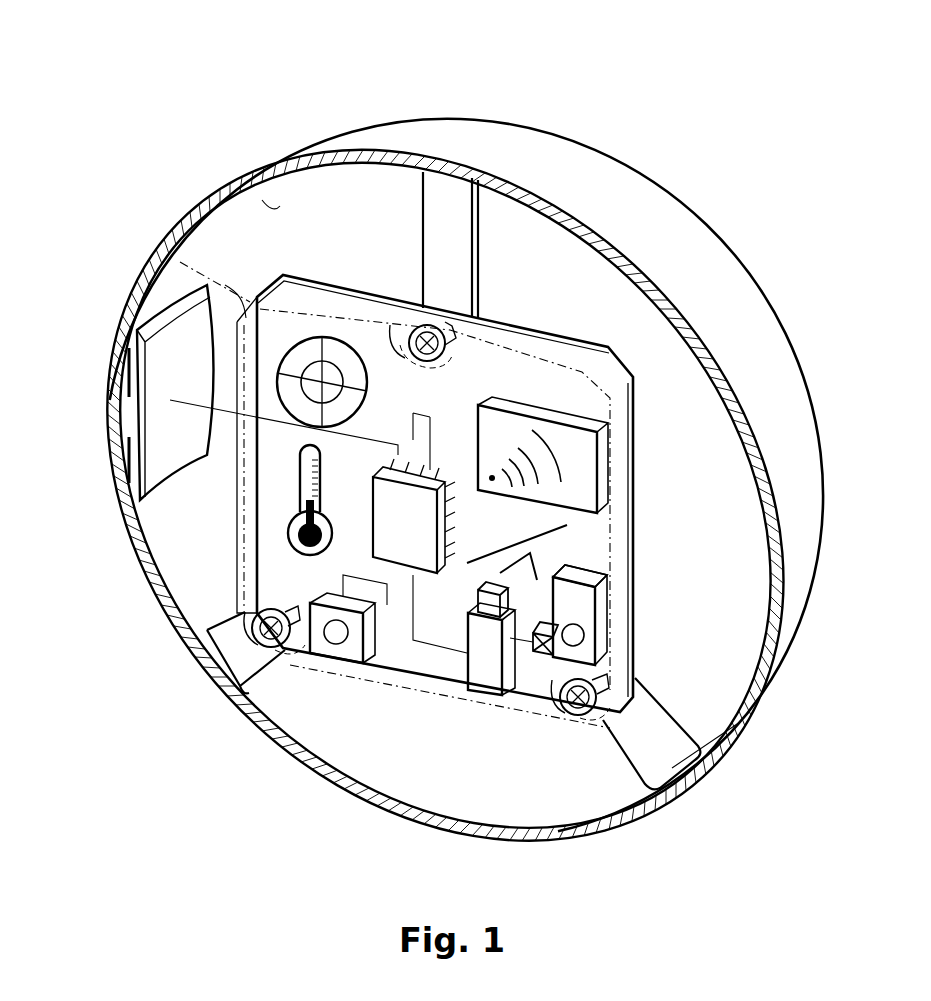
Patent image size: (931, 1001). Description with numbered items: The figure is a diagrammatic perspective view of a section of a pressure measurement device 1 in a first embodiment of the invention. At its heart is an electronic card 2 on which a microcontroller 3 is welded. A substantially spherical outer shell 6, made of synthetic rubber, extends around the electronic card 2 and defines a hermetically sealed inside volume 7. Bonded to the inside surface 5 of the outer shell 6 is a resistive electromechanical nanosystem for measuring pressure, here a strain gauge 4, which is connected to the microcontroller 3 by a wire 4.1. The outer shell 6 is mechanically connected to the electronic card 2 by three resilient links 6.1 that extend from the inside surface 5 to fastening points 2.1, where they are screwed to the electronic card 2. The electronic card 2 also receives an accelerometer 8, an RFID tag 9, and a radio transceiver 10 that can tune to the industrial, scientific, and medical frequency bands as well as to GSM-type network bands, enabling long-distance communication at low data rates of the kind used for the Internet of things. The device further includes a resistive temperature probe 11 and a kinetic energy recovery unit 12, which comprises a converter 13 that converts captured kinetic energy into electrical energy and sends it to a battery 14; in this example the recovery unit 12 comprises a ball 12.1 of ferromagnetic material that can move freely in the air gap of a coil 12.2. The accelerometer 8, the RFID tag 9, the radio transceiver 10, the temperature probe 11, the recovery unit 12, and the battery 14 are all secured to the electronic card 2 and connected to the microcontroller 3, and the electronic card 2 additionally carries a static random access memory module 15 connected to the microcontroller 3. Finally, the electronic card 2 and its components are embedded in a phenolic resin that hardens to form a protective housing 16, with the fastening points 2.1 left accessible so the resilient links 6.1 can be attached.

The pressure measurement device 1 is at (516, 78).
The electronic card 2 is at (620, 430).
The fastening points 2.1 is at (422, 324).
The microcontroller 3 is at (380, 547).
The strain gauge 4 is at (135, 412).
The wire 4.1 is at (178, 404).
The inside surface 5 is at (244, 206).
The outer shell 6 is at (733, 277).
The resilient links 6.1 is at (432, 223).
The inside volume 7 is at (565, 248).
The accelerometer 8 is at (341, 337).
The RFID tag 9 is at (604, 460).
The radio transceiver 10 is at (567, 530).
The resistive temperature probe 11 is at (300, 488).
The kinetic energy recovery unit 12 is at (585, 612).
The ball 12.1 is at (586, 636).
The coil 12.2 is at (602, 578).
The converter 13 is at (548, 656).
The battery 14 is at (488, 688).
The SRAM module 15 is at (339, 660).
The protective housing 16 is at (172, 253).